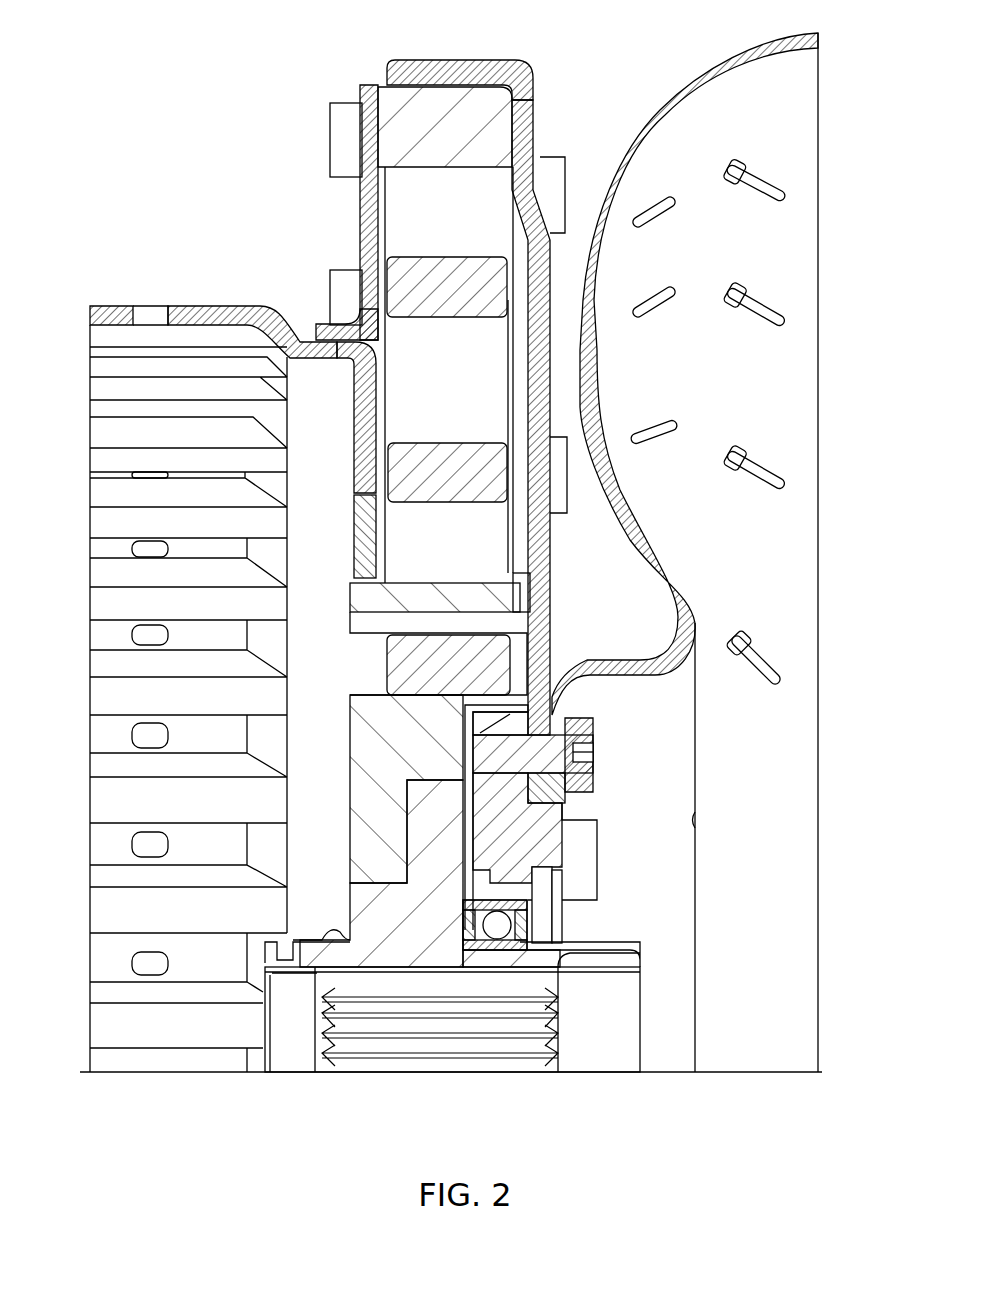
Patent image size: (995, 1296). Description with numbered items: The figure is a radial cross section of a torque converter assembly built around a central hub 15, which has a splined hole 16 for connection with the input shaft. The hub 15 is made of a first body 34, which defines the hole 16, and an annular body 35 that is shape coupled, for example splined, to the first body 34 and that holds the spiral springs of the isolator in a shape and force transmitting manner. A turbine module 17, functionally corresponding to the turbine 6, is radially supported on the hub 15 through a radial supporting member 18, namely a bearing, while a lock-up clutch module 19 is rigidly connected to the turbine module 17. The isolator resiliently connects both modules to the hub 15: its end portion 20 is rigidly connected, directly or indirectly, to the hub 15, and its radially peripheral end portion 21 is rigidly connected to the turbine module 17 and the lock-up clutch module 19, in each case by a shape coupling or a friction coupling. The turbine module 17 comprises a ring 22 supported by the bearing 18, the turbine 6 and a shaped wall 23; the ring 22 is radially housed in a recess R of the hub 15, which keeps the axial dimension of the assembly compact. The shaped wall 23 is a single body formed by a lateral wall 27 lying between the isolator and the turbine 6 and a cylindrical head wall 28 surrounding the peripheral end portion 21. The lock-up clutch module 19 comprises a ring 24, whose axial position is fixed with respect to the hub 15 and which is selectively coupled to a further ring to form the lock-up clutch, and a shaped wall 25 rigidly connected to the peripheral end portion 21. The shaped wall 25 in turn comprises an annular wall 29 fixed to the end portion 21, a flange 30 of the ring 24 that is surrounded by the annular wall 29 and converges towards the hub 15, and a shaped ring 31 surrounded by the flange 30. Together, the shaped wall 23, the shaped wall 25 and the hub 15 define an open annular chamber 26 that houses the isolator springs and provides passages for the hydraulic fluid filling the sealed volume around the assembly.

The turbine 6 is at (795, 852).
The hub 15 is at (293, 932).
The splined hole 16 is at (423, 1040).
The turbine module 17 is at (823, 68).
The radial supporting member 18 is at (497, 935).
The lock-up clutch module 19 is at (90, 578).
The end portion 20 is at (430, 655).
The radially peripheral end portion 21 is at (478, 113).
The ring 22 is at (557, 843).
The shaped wall 23 is at (533, 102).
The ring 24 is at (108, 306).
The shaped wall 25 is at (318, 324).
The open annular chamber 26 is at (395, 103).
The lateral wall 27 is at (530, 392).
The cylindrical head wall 28 is at (417, 58).
The annular wall 29 is at (362, 207).
The flange 30 is at (357, 468).
The shaped ring 31 is at (360, 550).
The first body 34 is at (382, 953).
The annular body 35 is at (357, 768).
The recess R is at (467, 715).